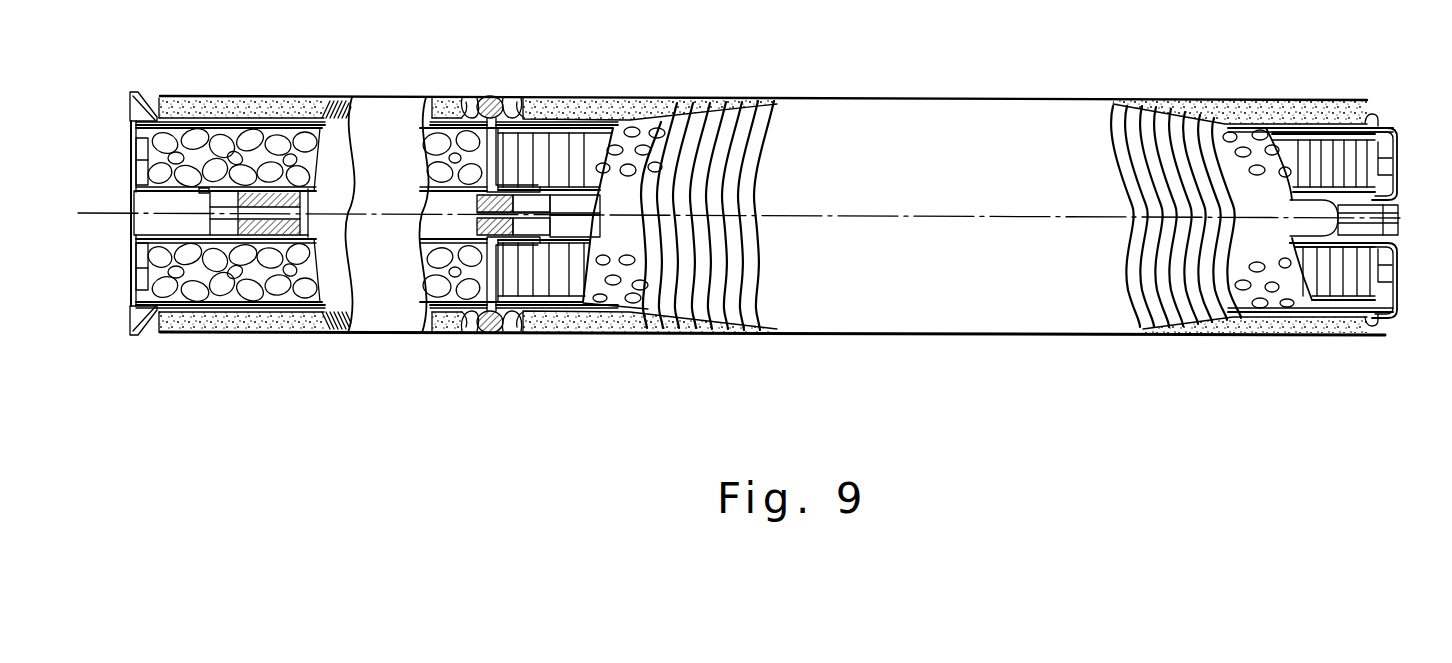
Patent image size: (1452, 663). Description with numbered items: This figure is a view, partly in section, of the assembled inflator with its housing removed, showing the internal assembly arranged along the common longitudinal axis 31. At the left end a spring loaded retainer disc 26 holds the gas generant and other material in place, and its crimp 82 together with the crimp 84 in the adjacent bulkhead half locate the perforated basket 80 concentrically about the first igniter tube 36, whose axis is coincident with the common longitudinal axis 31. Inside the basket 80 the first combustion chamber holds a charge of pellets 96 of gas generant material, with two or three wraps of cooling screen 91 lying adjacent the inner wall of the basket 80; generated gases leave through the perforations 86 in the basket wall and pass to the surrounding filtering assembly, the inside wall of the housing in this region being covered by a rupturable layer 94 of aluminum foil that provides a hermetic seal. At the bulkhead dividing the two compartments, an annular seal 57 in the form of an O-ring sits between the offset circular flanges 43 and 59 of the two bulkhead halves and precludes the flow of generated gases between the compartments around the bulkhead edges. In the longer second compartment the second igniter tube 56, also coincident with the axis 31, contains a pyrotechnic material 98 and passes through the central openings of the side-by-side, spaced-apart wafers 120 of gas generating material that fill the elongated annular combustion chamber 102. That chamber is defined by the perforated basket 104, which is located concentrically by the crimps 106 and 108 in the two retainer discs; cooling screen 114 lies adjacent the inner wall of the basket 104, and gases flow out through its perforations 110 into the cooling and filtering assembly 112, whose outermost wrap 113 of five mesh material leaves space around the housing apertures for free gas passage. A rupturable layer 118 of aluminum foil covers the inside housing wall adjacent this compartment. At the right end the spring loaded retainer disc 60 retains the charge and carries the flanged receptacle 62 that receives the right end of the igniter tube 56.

The retainer disc 26 is at (133, 92).
The common longitudinal axis 31 is at (97, 210).
The first igniter tube 36 is at (230, 147).
The offset circular flange 43 is at (468, 333).
The second igniter tube 56 is at (580, 178).
The annular seal 57 is at (491, 96).
The offset circular flange 59 is at (512, 338).
The retainer disc 60 is at (1383, 150).
The receptacle 62 is at (1397, 270).
The perforated basket 80 is at (265, 120).
The crimp 82 is at (140, 337).
The crimp 84 is at (465, 102).
The perforations 86 is at (293, 112).
The cooling screen 91 is at (283, 289).
The layer of aluminum foil 94 is at (310, 334).
The pellets 96 is at (250, 270).
The pyrotechnic material 98 is at (1387, 209).
The combustion chamber 102 is at (562, 287).
The perforated basket 104 is at (645, 130).
The crimp 106 is at (513, 97).
The crimp 108 is at (1373, 328).
The perforations 110 is at (617, 288).
The cooling and filtering assembly 112 is at (1253, 325).
The wrap of mesh 113 is at (773, 112).
The cooling screen 114 is at (1313, 135).
The layer of aluminum foil 118 is at (858, 117).
The wafers 120 is at (1343, 153).